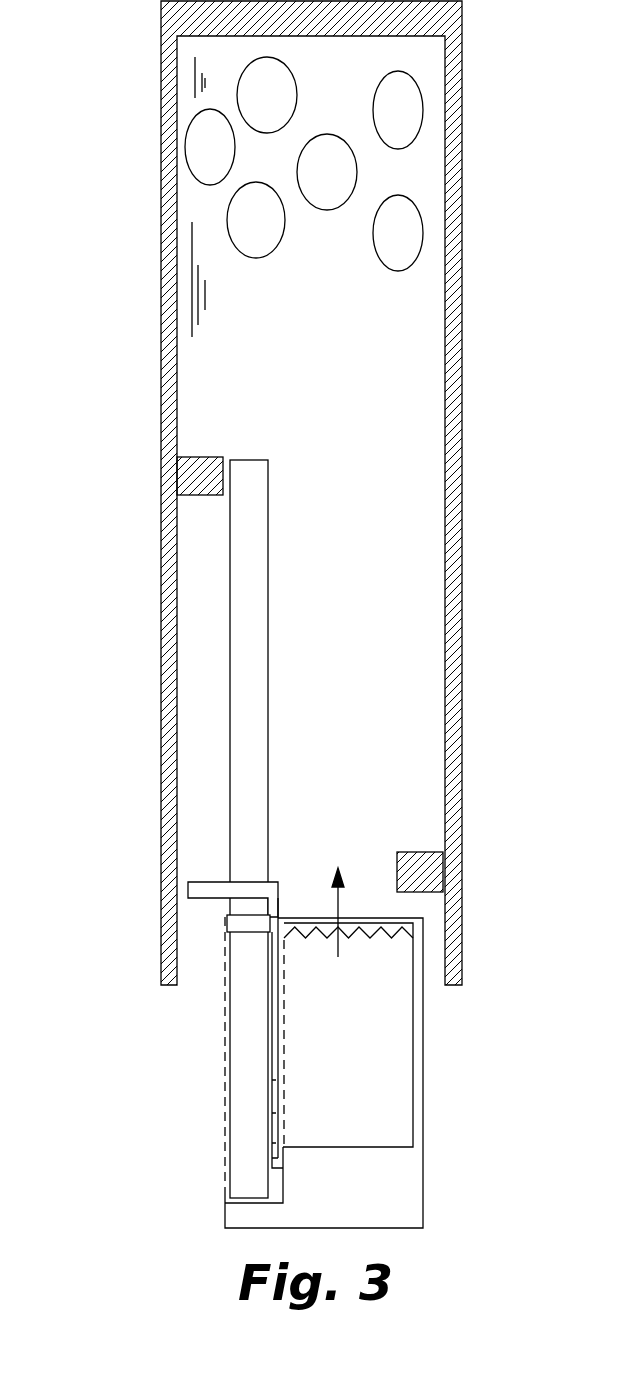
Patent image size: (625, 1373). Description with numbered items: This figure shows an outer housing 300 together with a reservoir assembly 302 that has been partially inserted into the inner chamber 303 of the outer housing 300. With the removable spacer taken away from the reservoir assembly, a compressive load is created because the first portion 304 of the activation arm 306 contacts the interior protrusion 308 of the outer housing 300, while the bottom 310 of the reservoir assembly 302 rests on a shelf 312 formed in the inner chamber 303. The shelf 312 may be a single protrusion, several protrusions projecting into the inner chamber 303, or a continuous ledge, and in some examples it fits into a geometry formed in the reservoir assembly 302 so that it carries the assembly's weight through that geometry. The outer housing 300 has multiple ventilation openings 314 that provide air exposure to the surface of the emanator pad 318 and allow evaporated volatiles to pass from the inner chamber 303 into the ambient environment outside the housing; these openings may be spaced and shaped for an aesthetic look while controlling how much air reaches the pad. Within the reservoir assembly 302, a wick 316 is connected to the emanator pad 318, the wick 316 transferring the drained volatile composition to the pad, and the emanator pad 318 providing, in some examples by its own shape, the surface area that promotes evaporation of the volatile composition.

The outer housing 300 is at (163, 302).
The reservoir assembly 302 is at (156, 1067).
The inner chamber 303 is at (363, 693).
The first portion 304 is at (291, 854).
The activation arm 306 is at (273, 1058).
The interior protrusion 308 is at (220, 458).
The bottom 310 is at (452, 1199).
The shelf 312 is at (413, 858).
The ventilation openings 314 is at (320, 193).
The wick 316 is at (250, 1022).
The emanator pad 318 is at (270, 571).